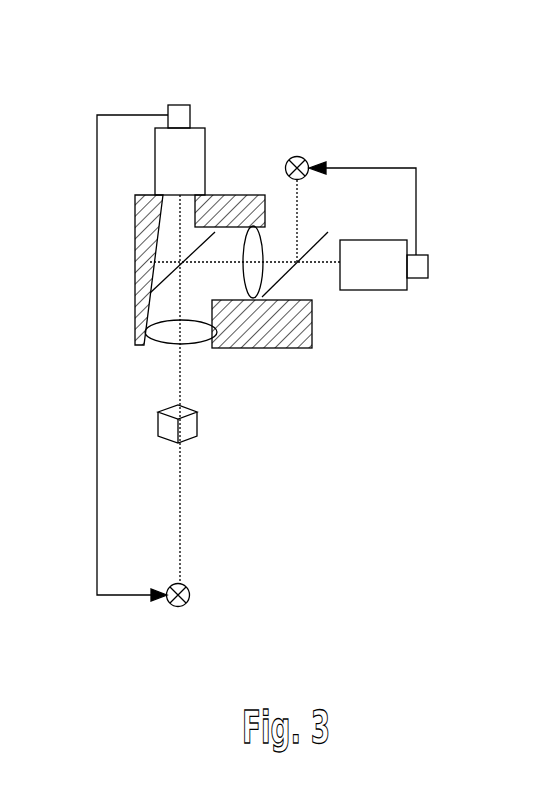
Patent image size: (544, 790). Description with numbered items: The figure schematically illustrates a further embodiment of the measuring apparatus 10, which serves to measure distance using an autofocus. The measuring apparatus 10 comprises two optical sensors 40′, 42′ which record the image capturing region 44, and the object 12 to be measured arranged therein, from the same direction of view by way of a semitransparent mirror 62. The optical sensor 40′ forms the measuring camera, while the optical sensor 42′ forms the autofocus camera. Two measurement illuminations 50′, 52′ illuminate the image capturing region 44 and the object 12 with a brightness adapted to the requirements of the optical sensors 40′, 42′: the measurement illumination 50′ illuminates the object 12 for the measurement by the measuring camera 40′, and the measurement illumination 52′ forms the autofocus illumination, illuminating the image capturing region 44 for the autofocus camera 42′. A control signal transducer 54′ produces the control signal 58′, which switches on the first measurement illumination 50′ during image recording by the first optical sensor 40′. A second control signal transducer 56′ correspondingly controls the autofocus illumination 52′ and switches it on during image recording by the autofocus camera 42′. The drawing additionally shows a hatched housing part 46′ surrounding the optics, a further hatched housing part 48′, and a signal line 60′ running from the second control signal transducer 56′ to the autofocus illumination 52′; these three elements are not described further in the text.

The measuring apparatus 10 is at (414, 112).
The object to be measured 12 is at (192, 422).
The optical sensor 40′ is at (188, 163).
The optical sensor 42′ is at (378, 290).
The image capturing region 44 is at (209, 458).
The housing 46′ is at (135, 212).
The housing part 48′ is at (266, 350).
The measurement illumination 50′ is at (190, 595).
The measurement illumination 52′ is at (297, 155).
The control signal transducer 54′ is at (180, 113).
The second control signal transducer 56′ is at (428, 265).
The control signal 58′ is at (97, 396).
The signal line 60′ is at (417, 212).
The semitransparent mirror 62 is at (150, 270).